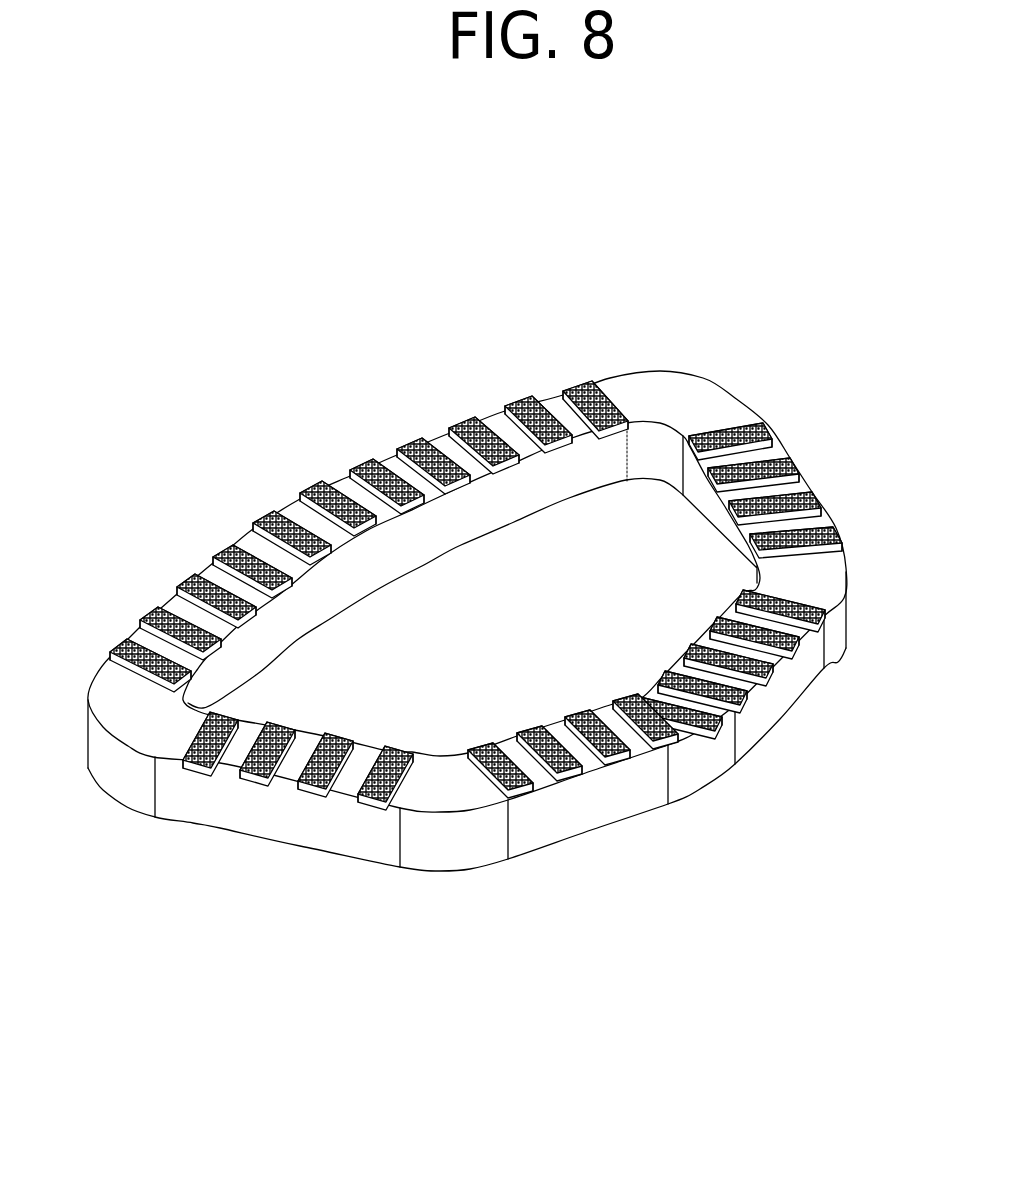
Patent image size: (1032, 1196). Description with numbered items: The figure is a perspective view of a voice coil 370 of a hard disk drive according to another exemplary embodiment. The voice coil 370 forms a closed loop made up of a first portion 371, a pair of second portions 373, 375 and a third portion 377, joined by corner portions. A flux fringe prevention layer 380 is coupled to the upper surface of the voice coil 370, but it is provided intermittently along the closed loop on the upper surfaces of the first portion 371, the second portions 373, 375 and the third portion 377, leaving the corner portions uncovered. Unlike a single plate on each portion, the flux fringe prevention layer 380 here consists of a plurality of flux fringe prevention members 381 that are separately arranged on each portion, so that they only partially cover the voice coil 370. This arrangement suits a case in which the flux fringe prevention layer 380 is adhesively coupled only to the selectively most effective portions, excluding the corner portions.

The voice coil 370 is at (462, 587).
The first portion 371 is at (680, 788).
The second portion 373 is at (285, 820).
The second portion 375 is at (718, 530).
The third portion 377 is at (432, 540).
The flux fringe prevention layer 380 is at (398, 428).
The flux fringe prevention member 381 is at (278, 527).